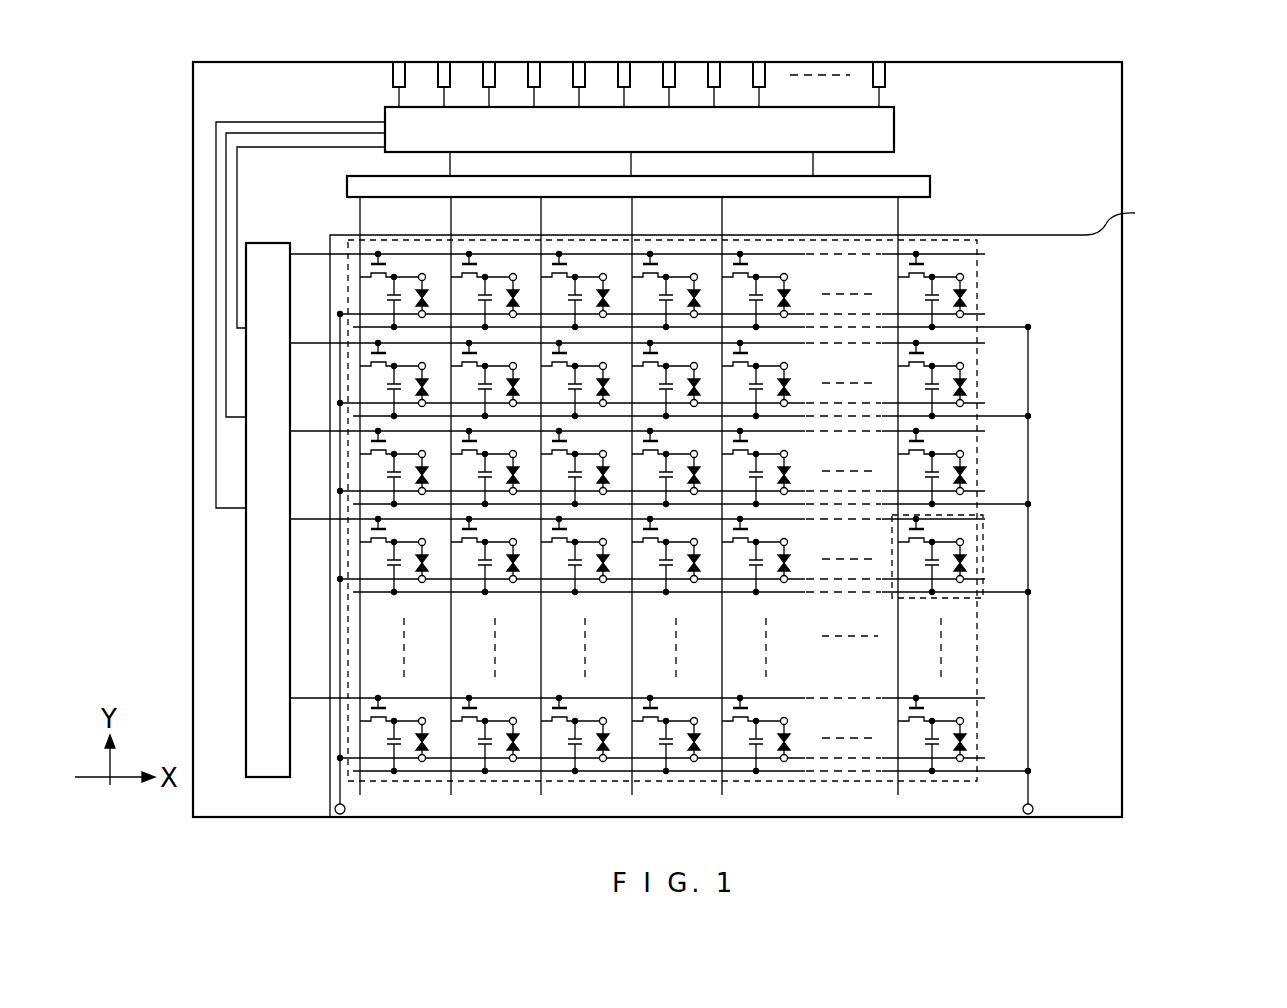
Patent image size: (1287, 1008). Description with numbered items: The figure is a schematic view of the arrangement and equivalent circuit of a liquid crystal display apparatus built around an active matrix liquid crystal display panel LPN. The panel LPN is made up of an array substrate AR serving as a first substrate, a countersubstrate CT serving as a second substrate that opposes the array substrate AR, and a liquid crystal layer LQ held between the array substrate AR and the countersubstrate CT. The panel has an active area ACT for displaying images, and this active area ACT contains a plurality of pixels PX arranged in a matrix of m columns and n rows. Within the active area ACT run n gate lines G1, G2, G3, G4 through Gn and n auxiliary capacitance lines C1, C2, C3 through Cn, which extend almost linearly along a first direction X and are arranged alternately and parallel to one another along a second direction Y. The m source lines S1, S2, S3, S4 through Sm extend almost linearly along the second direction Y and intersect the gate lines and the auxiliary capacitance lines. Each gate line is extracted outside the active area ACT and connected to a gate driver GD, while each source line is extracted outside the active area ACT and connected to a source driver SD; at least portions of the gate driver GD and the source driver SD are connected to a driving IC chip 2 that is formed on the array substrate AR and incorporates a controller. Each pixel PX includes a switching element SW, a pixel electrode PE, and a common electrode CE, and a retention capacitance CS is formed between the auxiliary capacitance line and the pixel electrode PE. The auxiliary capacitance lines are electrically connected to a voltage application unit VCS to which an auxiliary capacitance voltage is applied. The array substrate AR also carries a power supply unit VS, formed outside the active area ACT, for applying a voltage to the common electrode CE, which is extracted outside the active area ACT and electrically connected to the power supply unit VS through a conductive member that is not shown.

The driving IC chip 2 is at (893, 107).
The liquid crystal display panel LPN is at (1150, 76).
The source driver SD is at (930, 184).
The gate driver GD is at (246, 632).
The countersubstrate CT is at (756, 506).
The active area ACT is at (977, 356).
The source line S1 is at (366, 221).
The source line S2 is at (457, 221).
The source line S3 is at (547, 221).
The source line S4 is at (638, 221).
The source line Sm is at (904, 221).
The gate line G1 is at (318, 254).
The gate line G2 is at (318, 343).
The gate line G3 is at (318, 431).
The gate line G4 is at (318, 519).
The gate line Gn is at (318, 698).
The auxiliary capacitance line C1 is at (1004, 327).
The auxiliary capacitance line C2 is at (1004, 416).
The auxiliary capacitance line C3 is at (1004, 504).
The auxiliary capacitance line Cn is at (1004, 771).
The pixel PX is at (1130, 603).
The switching element SW is at (906, 536).
The retention capacitance CS is at (922, 565).
The pixel electrode PE is at (963, 540).
The liquid crystal layer LQ is at (967, 553).
The common electrode CE is at (966, 580).
The voltage application unit VCS is at (1033, 807).
The power supply unit VS is at (344, 813).
The array substrate AR is at (262, 808).